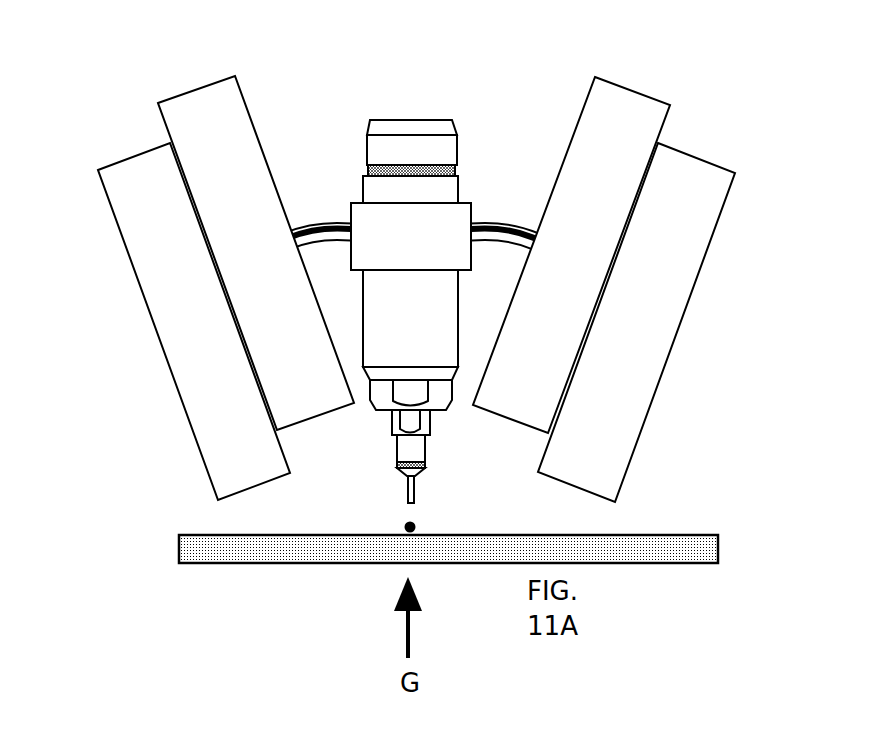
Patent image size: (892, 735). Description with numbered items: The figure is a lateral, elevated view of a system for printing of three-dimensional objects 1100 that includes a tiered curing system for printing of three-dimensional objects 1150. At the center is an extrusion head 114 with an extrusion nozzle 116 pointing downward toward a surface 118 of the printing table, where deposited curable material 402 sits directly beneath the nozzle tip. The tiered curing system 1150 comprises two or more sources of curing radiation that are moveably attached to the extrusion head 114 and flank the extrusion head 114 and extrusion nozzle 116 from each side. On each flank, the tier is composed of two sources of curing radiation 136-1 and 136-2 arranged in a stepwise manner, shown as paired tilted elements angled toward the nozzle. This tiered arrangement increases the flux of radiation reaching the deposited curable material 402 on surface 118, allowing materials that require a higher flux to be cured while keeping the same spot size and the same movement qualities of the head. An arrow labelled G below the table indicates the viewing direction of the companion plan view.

The system for printing of 3-D objects 1100 is at (411, 258).
The tiered curing system for printing of 3-D objects 1150 is at (435, 257).
The source of curing radiation 136-1 is at (168, 128).
The source of curing radiation 136-2 is at (142, 293).
The extrusion head 114 is at (352, 203).
The extrusion nozzle 116 is at (378, 389).
The deposited curable material 402 is at (407, 525).
The surface 118 is at (227, 535).